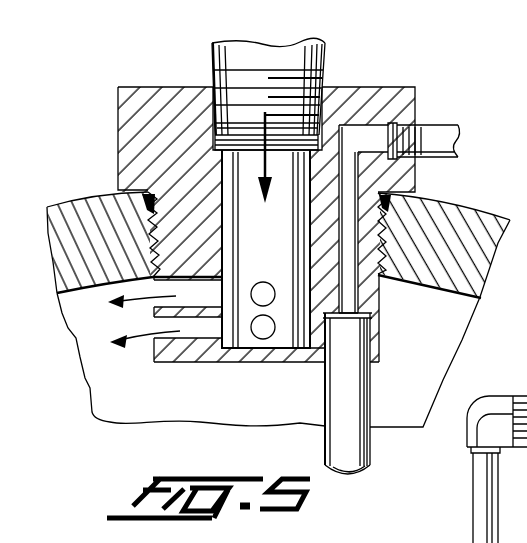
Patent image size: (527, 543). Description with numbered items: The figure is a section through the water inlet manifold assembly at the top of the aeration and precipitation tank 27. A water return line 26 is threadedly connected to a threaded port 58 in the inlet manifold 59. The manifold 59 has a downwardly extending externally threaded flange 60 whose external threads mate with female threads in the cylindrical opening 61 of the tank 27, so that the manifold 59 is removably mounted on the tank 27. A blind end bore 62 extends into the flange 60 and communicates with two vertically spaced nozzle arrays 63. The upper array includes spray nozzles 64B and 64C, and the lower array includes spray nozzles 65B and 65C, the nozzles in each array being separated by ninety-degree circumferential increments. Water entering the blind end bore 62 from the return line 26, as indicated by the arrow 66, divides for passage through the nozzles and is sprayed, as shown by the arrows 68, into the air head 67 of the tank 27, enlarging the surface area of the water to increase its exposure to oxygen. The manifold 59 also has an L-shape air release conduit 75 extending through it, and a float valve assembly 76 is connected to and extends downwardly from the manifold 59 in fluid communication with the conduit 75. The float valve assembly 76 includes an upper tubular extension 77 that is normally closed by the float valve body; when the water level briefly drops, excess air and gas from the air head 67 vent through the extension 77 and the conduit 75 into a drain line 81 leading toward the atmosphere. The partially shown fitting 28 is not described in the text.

The water return line 26 is at (320, 48).
The aeration and precipitation tank 27 is at (467, 217).
The elbow fitting 28 is at (502, 505).
The threaded port 58 is at (212, 100).
The inlet manifold 59 is at (142, 124).
The externally threaded flange 60 is at (152, 228).
The cylindrical opening 61 is at (383, 275).
The blind end bore 62 is at (279, 240).
The nozzle arrays 63 is at (167, 362).
The spray nozzle 64B is at (197, 290).
The spray nozzle 64C is at (263, 282).
The spray nozzle 65B is at (207, 332).
The spray nozzle 65C is at (268, 340).
The arrow 66 is at (240, 163).
The air head 67 is at (431, 364).
The arrows 68 is at (141, 334).
The air release conduit 75 is at (353, 180).
The float valve assembly 76 is at (378, 421).
The upper tubular extension 77 is at (368, 457).
The drain line 81 is at (438, 128).